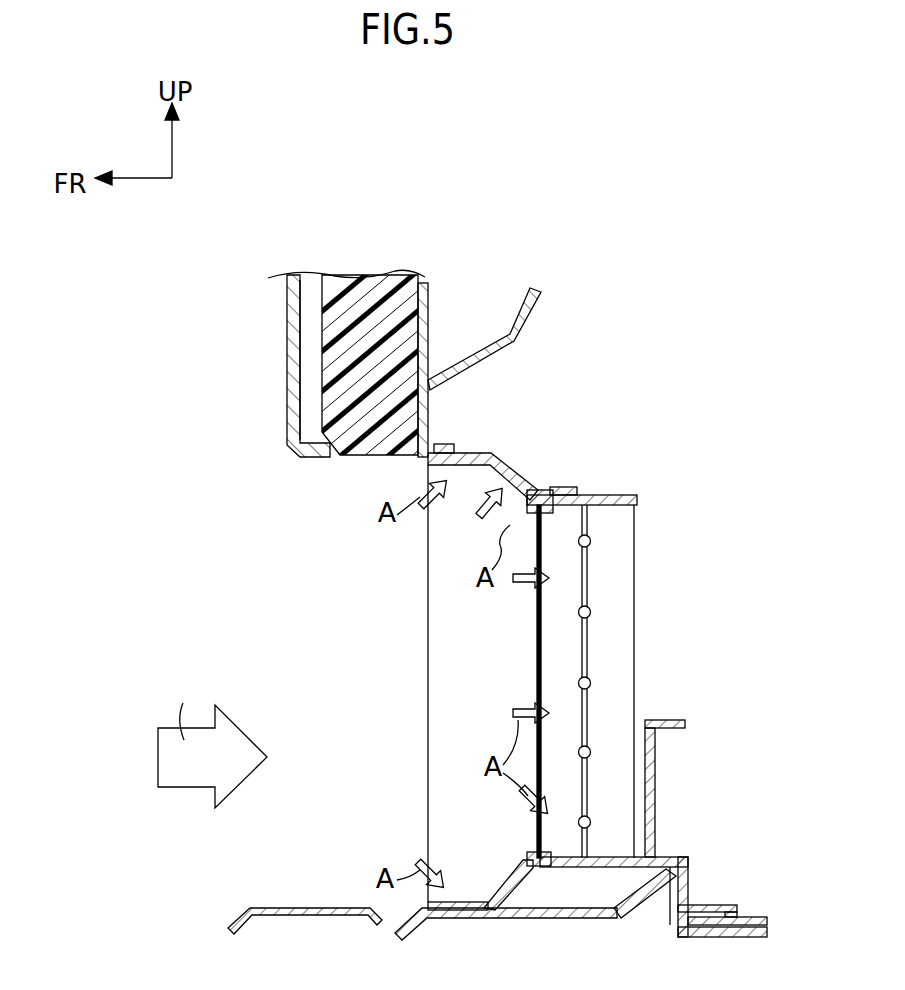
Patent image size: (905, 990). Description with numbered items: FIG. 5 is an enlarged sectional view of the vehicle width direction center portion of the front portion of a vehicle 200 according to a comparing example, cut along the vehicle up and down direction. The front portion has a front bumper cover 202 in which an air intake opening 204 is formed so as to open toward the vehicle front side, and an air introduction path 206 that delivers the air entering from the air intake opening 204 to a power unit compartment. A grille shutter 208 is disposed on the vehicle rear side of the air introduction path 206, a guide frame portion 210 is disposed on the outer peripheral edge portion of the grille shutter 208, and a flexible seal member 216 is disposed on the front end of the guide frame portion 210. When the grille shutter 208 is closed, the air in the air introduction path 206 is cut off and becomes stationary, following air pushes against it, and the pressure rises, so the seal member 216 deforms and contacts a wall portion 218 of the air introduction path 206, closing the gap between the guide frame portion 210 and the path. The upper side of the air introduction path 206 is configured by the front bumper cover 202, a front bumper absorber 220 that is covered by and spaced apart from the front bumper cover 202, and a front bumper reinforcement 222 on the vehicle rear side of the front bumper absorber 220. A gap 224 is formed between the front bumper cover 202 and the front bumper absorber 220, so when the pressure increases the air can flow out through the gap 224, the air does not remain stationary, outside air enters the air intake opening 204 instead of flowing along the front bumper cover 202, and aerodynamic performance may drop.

The vehicle 200 is at (232, 289).
The front bumper cover 202 is at (293, 458).
The air intake opening 204 is at (322, 648).
The air introduction path 206 is at (365, 708).
The grille shutter 208 is at (597, 497).
The guide frame portion 210 is at (530, 480).
The seal member 216 is at (455, 468).
The wall portion 218 is at (445, 450).
The front bumper absorber 220 is at (370, 290).
The front bumper reinforcement 222 is at (430, 300).
The gap 224 is at (304, 292).